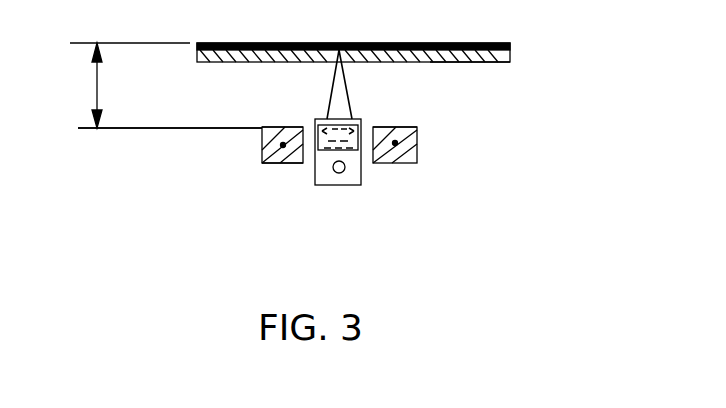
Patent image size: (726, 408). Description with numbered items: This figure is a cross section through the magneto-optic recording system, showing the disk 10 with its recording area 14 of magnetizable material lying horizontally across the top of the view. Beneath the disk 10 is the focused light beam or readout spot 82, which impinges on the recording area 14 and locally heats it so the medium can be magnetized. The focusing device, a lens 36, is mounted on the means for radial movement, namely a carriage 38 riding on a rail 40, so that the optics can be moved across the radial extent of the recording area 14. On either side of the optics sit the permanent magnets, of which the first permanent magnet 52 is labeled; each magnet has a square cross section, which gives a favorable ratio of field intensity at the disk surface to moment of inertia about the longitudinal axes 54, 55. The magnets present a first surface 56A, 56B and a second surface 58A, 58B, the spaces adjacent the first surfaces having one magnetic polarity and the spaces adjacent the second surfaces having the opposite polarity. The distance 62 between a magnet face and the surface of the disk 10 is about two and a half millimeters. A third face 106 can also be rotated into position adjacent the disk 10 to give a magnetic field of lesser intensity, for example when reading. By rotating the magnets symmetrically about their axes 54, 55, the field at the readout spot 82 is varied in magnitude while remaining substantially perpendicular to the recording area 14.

The disk 10 is at (510, 60).
The recording area 14 is at (495, 44).
The lens 36 is at (337, 125).
The carriage 38 is at (342, 174).
The rail 40 is at (322, 184).
The first permanent magnet 52 is at (298, 166).
The longitudinal axis 54 is at (296, 126).
The longitudinal axis 55 is at (391, 127).
The first surface 56A is at (283, 145).
The first surface 56B is at (395, 143).
The second surface 58A is at (263, 164).
The second surface 58B is at (417, 163).
The distance 62 is at (97, 90).
The readout spot 82 is at (333, 58).
The third face 106 is at (262, 161).